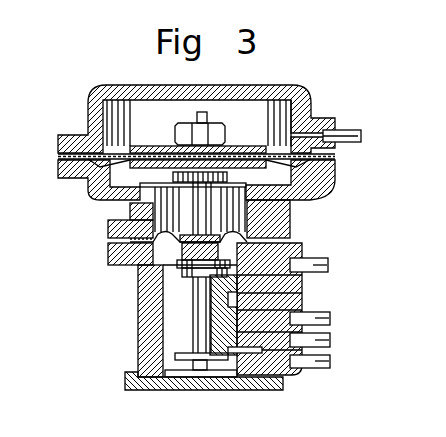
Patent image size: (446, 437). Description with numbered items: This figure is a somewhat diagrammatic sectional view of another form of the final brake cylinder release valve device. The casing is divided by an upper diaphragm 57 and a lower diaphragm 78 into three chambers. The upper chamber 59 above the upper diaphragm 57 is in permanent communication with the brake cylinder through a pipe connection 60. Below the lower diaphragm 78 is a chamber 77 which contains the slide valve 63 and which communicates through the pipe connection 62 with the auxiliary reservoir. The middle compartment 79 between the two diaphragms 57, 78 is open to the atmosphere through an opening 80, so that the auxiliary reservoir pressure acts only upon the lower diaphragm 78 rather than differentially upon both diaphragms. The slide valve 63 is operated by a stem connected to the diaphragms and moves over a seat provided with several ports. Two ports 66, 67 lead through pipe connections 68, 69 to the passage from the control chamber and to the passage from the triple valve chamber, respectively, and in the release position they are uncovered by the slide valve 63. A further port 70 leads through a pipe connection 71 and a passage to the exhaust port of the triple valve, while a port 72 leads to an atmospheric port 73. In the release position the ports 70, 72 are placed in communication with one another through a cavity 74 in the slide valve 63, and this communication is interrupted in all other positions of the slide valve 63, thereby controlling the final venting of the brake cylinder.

The upper diaphragm 57 is at (130, 162).
The upper chamber 59 is at (125, 108).
The pipe connection 60 is at (350, 133).
The pipe connection 62 is at (306, 266).
The slide valve 63 is at (228, 284).
The port 66 is at (262, 345).
The port 67 is at (263, 352).
The pipe connection 68 is at (330, 341).
The pipe connection 69 is at (330, 362).
The port 70 is at (302, 307).
The pipe connection 71 is at (330, 319).
The port 72 is at (270, 293).
The atmospheric port 73 is at (268, 301).
The cavity 74 is at (230, 303).
The chamber 77 is at (163, 263).
The lower diaphragm 78 is at (231, 231).
The middle compartment 79 is at (128, 181).
The opening 80 is at (137, 214).